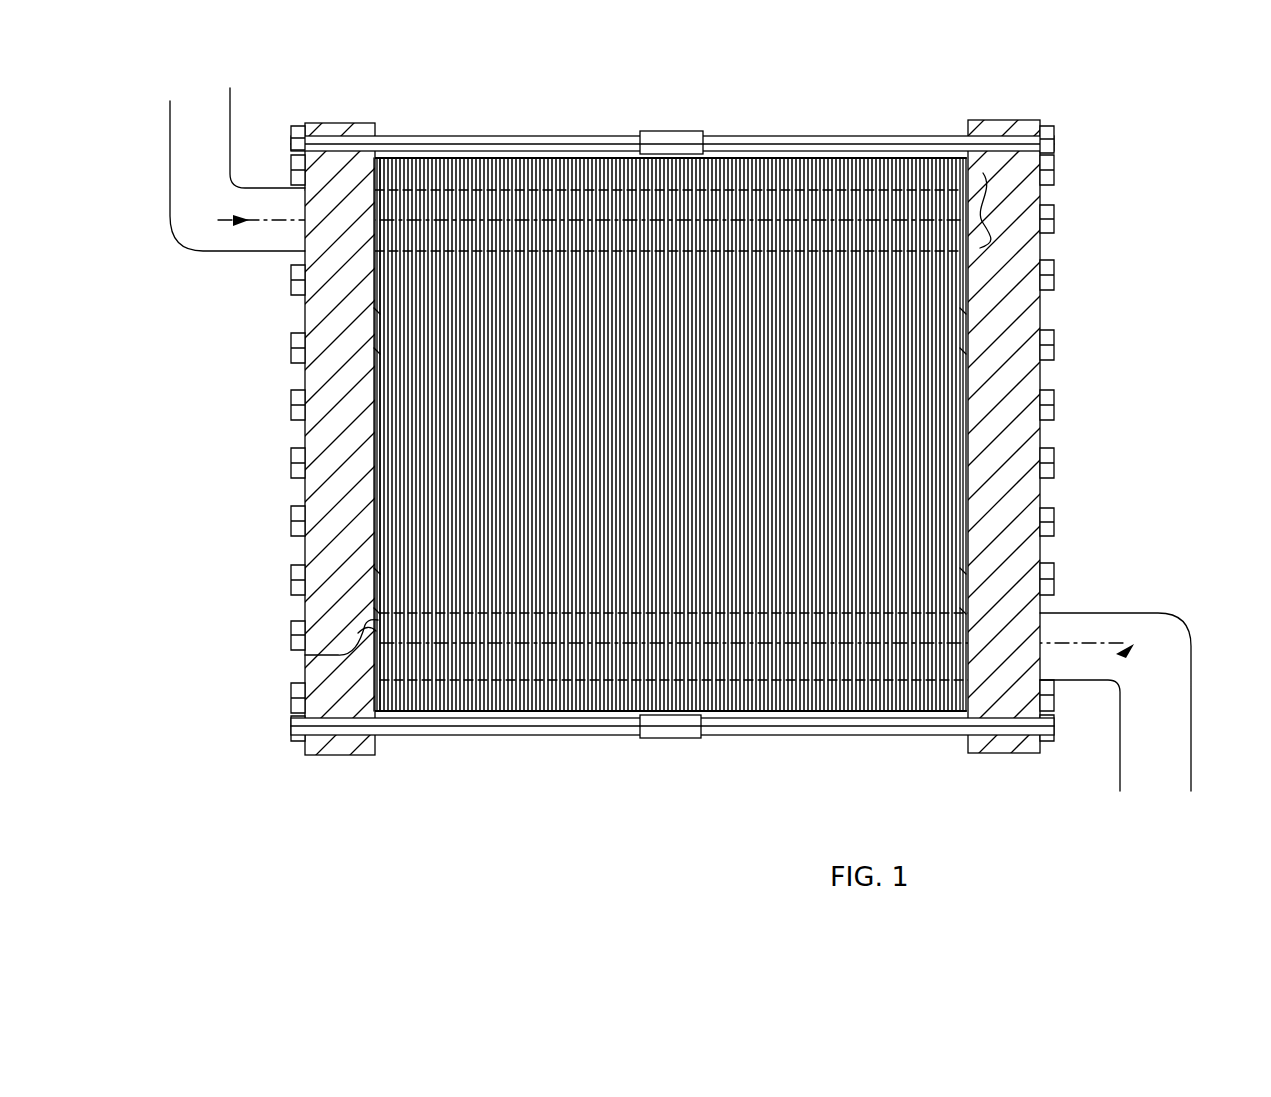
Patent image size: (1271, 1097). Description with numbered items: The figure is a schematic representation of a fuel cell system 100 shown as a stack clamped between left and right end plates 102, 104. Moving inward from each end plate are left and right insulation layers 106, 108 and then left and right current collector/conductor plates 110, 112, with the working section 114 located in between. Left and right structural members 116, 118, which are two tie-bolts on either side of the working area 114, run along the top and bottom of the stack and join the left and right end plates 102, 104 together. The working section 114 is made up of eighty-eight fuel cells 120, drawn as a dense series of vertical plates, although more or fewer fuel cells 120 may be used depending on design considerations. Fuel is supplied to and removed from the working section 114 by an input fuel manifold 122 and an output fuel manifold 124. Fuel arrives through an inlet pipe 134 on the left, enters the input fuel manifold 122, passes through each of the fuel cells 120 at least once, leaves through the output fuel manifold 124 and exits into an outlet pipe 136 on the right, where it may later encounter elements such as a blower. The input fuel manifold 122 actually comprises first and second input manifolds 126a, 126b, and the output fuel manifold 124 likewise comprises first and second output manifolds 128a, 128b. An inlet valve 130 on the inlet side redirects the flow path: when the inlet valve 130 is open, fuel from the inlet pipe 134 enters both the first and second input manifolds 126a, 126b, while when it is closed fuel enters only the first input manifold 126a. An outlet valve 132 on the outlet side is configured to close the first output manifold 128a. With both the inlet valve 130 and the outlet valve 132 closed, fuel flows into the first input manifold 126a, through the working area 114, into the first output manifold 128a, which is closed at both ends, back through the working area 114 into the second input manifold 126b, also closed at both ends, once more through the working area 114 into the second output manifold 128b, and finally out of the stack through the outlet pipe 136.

The fuel cell system 100 is at (1098, 96).
The left end plate 102 is at (313, 115).
The right end plate 104 is at (1022, 112).
The left insulation layer 106 is at (372, 150).
The right insulation layer 108 is at (957, 130).
The left current collector/conductor plate 110 is at (376, 150).
The right current collector/conductor plate 112 is at (955, 150).
The working section 114 is at (737, 128).
The left structural member 116 is at (620, 128).
The right structural member 118 is at (742, 730).
The fuel cells 120 is at (532, 700).
The input fuel manifold 122 is at (980, 212).
The output fuel manifold 124 is at (297, 647).
The first input manifold 126a is at (494, 190).
The second input manifold 126b is at (584, 215).
The first output manifold 128a is at (637, 620).
The second output manifold 128b is at (580, 657).
The inlet valve 130 is at (230, 252).
The outlet valve 132 is at (1108, 640).
The inlet pipe 134 is at (162, 143).
The outlet pipe 136 is at (1183, 715).